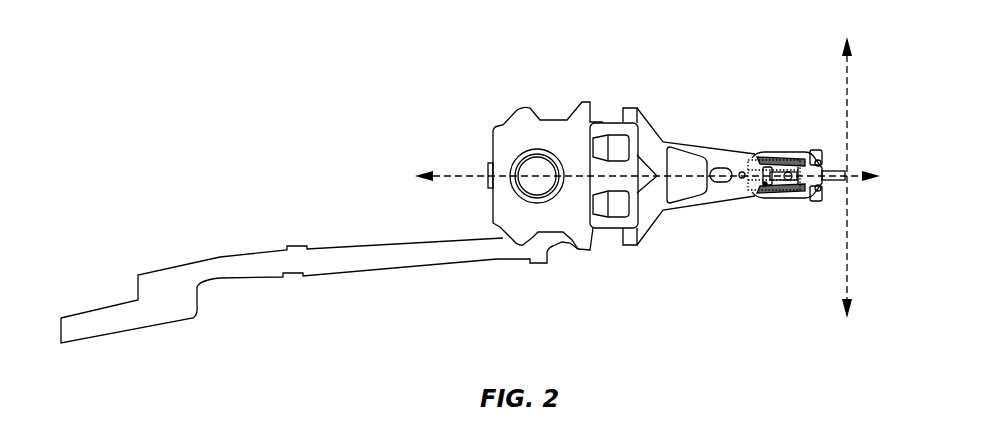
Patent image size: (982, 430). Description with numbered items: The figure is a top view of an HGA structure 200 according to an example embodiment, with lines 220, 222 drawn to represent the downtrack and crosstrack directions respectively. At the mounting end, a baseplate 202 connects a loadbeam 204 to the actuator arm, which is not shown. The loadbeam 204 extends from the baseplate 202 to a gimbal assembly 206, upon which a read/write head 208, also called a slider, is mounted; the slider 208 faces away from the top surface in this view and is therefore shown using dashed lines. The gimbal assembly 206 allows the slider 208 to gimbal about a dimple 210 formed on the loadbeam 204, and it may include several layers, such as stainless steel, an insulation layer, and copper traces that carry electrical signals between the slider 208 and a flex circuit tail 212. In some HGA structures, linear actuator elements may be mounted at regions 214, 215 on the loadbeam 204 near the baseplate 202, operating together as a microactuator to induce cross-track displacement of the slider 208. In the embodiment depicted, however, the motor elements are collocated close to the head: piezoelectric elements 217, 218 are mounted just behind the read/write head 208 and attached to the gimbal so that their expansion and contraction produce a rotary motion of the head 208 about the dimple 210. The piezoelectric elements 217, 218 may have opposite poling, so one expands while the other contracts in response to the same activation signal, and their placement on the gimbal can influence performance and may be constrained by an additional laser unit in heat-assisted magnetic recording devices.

The HGA structure 200 is at (612, 310).
The baseplate 202 is at (542, 117).
The loadbeam 204 is at (683, 140).
The gimbal assembly 206 is at (800, 150).
The read/write head 208 is at (780, 152).
The dimple 210 is at (785, 186).
The flex circuit tail 212 is at (90, 330).
The region 214 is at (605, 135).
The region 215 is at (603, 217).
The piezoelectric element 217 is at (748, 150).
The piezoelectric element 218 is at (752, 190).
The downtrack direction line 220 is at (463, 176).
The crosstrack direction line 222 is at (847, 270).